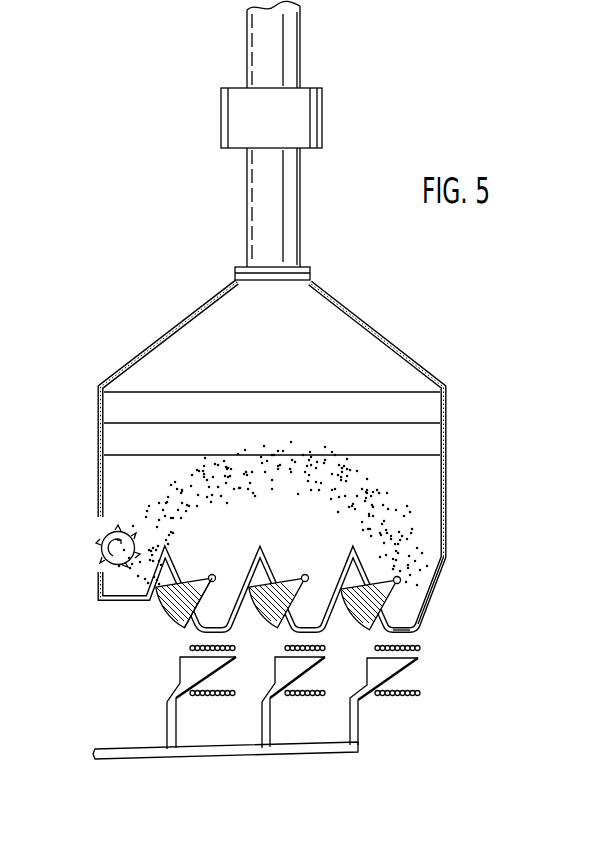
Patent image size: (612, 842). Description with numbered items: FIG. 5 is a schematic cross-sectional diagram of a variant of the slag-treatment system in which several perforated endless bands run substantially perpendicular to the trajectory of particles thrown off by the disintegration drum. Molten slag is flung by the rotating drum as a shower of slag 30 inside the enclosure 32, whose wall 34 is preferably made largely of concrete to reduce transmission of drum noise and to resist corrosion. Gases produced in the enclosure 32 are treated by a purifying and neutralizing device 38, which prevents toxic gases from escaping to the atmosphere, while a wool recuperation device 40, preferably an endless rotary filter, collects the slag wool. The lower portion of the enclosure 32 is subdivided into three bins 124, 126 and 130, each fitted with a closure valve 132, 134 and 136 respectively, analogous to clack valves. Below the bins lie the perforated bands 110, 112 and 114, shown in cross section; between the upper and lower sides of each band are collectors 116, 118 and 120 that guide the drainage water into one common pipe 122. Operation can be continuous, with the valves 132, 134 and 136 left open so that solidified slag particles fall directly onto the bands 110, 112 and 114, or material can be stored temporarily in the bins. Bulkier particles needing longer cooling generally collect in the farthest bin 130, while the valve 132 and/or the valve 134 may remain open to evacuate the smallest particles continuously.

The shower of slag 30 is at (403, 503).
The enclosure 32 is at (357, 353).
The wall 34 is at (418, 368).
The purifying and neutralizing device 38 is at (310, 120).
The wool recuperation device 40 is at (310, 273).
The perforated band 110 is at (207, 697).
The perforated band 112 is at (303, 697).
The perforated band 114 is at (410, 695).
The collector 116 is at (185, 665).
The collector 118 is at (287, 670).
The collector 120 is at (390, 672).
The common pipe 122 is at (350, 750).
The bin 124 is at (212, 618).
The bin 126 is at (328, 568).
The farthest bin 130 is at (425, 582).
The closure valve 132 is at (175, 607).
The closure valve 134 is at (350, 633).
The closure valve 136 is at (368, 615).